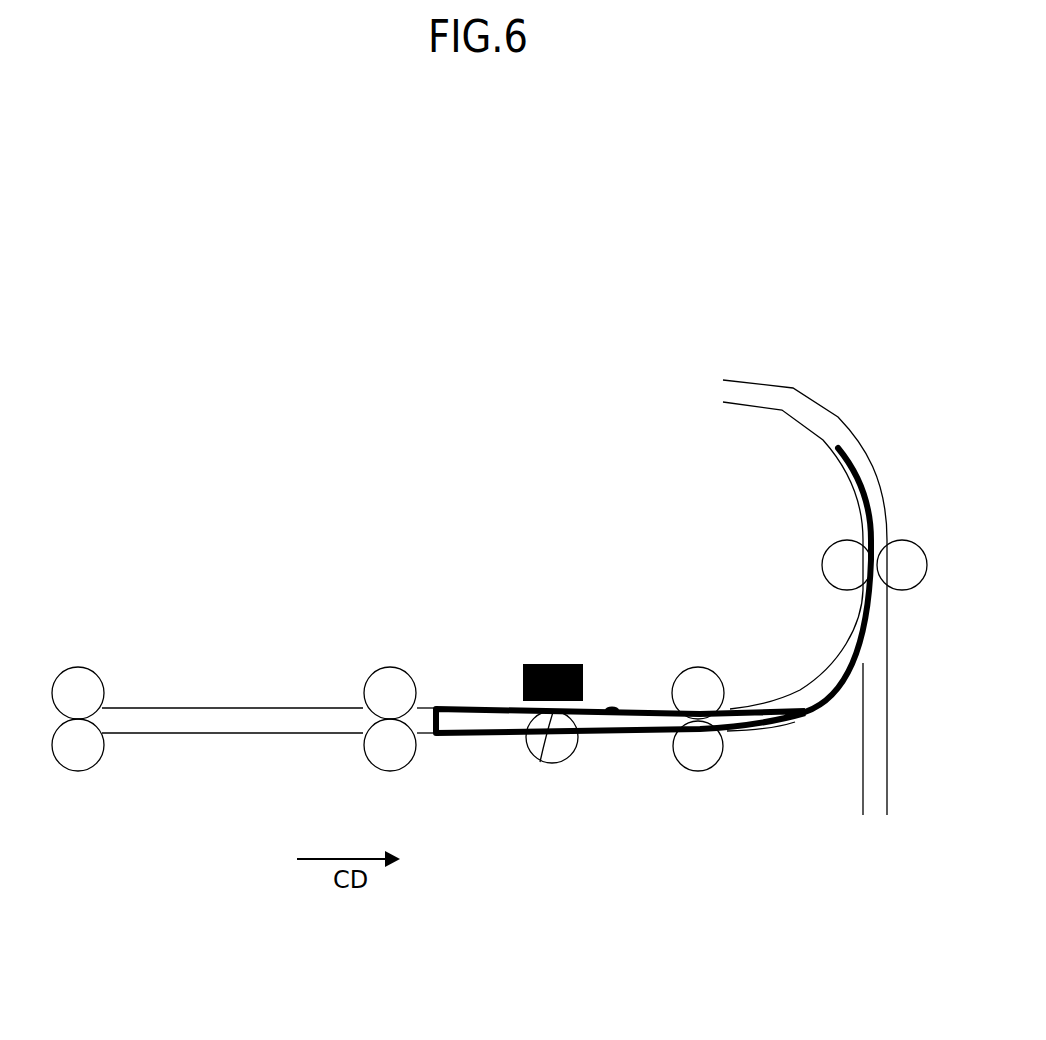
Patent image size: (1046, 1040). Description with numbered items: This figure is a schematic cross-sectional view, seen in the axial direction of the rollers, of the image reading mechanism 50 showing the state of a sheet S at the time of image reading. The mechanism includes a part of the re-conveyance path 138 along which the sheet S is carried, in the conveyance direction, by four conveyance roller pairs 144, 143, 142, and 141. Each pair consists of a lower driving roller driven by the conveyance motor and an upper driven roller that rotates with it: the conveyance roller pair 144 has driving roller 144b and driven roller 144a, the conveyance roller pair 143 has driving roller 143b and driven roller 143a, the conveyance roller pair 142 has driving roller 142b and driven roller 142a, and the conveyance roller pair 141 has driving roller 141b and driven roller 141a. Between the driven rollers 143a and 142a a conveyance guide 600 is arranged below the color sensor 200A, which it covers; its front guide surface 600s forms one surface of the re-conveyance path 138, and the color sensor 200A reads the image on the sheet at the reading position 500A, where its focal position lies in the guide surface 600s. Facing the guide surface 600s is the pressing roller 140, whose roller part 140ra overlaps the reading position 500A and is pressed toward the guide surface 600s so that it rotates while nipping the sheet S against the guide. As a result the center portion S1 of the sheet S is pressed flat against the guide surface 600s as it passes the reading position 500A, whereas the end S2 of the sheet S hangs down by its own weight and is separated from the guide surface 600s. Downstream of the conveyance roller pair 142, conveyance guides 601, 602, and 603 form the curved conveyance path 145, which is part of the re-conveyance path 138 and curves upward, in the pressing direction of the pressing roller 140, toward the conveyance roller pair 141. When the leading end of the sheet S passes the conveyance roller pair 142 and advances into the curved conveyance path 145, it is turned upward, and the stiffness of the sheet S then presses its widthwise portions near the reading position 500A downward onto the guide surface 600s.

The image reading mechanism 50 is at (698, 627).
The re-conveyance path 138 is at (235, 722).
The pressing roller 140 is at (548, 792).
The roller part 140ra is at (567, 742).
The conveyance roller pair 141 is at (856, 521).
The driven roller 141a is at (905, 555).
The driving roller 141b is at (830, 556).
The conveyance roller pair 142 is at (715, 689).
The driven roller 142a is at (715, 683).
The driving roller 142b is at (715, 748).
The conveyance roller pair 143 is at (406, 691).
The driven roller 143a is at (402, 682).
The driving roller 143b is at (408, 750).
The conveyance roller pair 144 is at (96, 691).
The driven roller 144a is at (92, 682).
The driving roller 144b is at (95, 750).
The curved conveyance path 145 is at (840, 665).
The color sensor 200A is at (540, 663).
The reading position 500A is at (538, 752).
The conveyance guide 600 is at (653, 645).
The guide surface 600s is at (620, 706).
The conveyance guide 601 is at (860, 672).
The conveyance guide 602 is at (888, 663).
The conveyance guide 603 is at (792, 695).
The sheet S is at (863, 630).
The center portion S1 is at (631, 707).
The end S2 is at (663, 735).